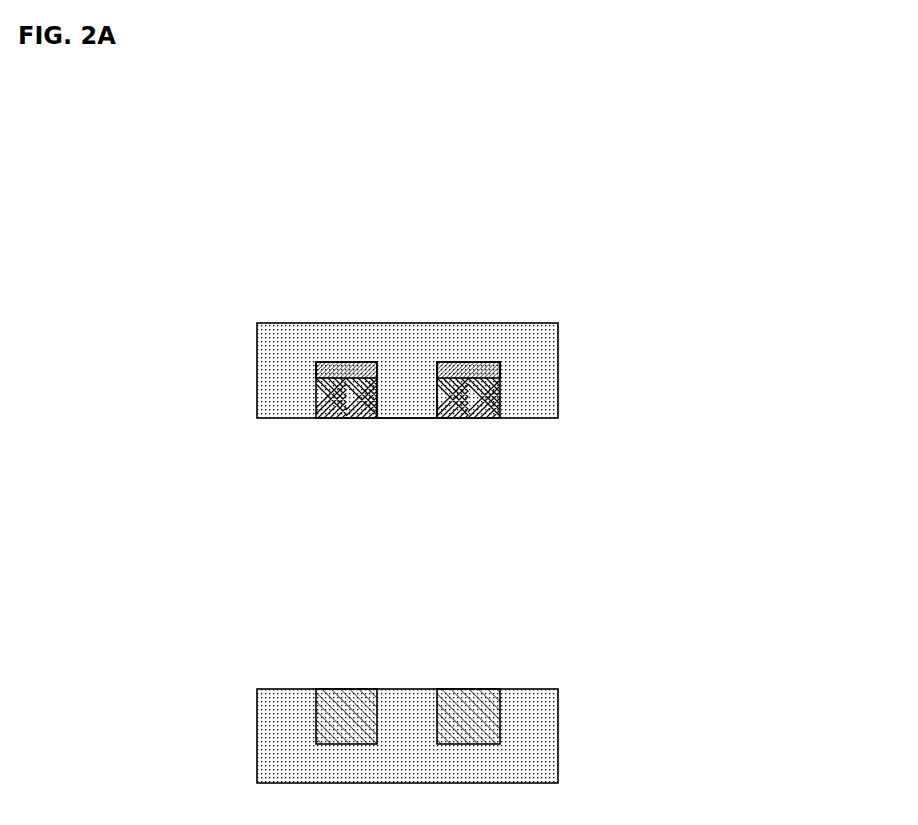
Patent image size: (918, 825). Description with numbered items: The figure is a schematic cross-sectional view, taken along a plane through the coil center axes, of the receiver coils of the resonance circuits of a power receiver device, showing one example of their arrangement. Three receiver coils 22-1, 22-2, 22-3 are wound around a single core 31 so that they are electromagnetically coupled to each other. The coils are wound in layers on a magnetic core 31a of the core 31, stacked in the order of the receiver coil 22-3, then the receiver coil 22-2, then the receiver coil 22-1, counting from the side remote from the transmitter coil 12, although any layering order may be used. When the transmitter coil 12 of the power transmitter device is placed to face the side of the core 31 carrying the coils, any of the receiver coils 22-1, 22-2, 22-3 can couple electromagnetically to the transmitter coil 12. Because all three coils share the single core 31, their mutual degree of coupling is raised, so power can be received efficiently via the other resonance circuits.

The core 31 is at (567, 313).
The magnetic core 31a is at (408, 390).
The receiver coil 22-1 is at (473, 403).
The receiver coil 22-2 is at (328, 410).
The receiver coil 22-3 is at (318, 373).
The transmitter coil 12 is at (473, 712).